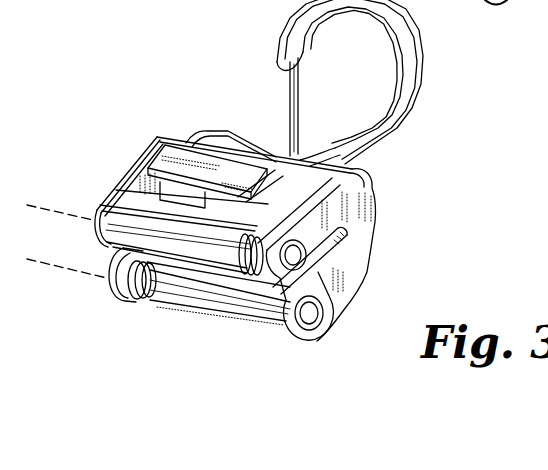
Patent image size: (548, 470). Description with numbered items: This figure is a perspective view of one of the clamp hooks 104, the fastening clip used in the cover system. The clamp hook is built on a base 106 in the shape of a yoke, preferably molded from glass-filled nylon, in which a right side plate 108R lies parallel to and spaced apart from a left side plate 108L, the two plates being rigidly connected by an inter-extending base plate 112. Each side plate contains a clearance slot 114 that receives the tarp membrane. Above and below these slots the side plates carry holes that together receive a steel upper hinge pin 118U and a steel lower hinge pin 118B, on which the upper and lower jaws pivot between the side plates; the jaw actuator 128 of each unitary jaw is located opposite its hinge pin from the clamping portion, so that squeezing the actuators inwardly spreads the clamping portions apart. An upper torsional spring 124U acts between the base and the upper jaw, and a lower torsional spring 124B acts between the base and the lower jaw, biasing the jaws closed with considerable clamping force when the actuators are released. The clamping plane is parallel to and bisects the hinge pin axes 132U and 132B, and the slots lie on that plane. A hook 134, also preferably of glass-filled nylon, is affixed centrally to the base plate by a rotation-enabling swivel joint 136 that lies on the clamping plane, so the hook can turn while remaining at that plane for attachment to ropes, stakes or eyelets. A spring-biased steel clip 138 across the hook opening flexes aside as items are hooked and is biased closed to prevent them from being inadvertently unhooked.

The clamp hook 104 is at (256, 75).
The base 106 is at (376, 196).
The left side plate 108L is at (351, 256).
The right side plate 108R is at (118, 297).
The base plate 112 is at (240, 142).
The clearance slot 114 is at (330, 268).
The upper hinge pin 118U is at (292, 262).
The lower hinge pin 118B is at (311, 330).
The upper torsional spring 124U is at (243, 263).
The lower torsional spring 124B is at (133, 300).
The jaw actuator 128 is at (180, 165).
The upper hinge pin axis 132U is at (56, 205).
The lower hinge pin axis 132B is at (53, 256).
The hook 134 is at (422, 88).
The swivel joint 136 is at (360, 158).
The clip 138 is at (299, 91).